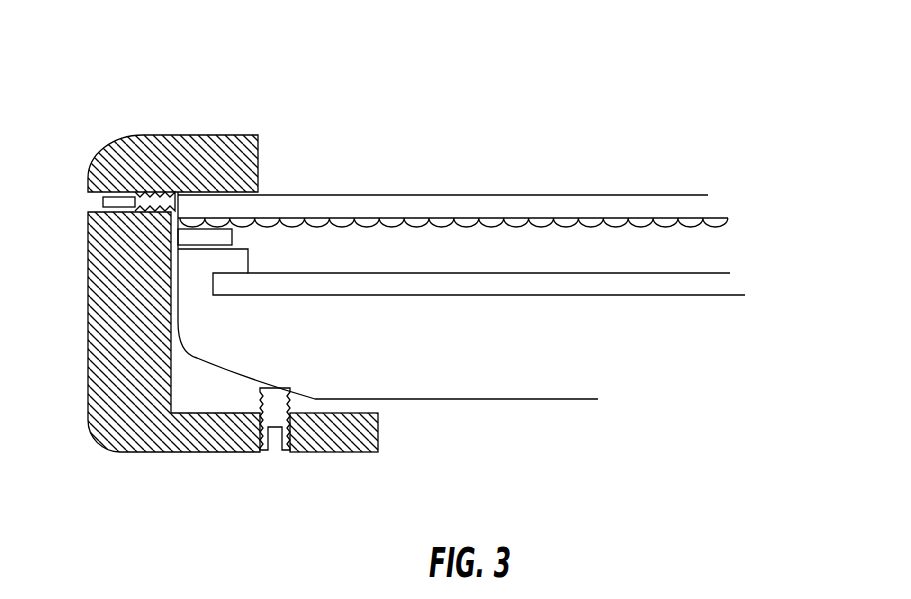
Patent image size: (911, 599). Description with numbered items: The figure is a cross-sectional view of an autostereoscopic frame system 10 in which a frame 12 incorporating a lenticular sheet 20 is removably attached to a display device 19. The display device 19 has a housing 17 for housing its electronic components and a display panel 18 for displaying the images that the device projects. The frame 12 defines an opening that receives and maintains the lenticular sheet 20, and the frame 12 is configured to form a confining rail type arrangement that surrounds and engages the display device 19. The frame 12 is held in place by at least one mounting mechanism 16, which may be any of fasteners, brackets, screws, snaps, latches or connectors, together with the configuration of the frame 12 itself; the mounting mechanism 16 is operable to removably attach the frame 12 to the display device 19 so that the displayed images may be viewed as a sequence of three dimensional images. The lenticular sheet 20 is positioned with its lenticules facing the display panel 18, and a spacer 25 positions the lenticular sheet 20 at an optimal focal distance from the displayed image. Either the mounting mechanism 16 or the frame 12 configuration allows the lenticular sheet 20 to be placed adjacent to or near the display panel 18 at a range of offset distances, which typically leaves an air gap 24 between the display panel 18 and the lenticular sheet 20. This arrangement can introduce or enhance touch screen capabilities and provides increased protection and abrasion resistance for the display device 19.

The autostereoscopic frame system 10 is at (203, 110).
The frame 12 is at (138, 483).
The mounting mechanism 16 is at (253, 525).
The housing 17 is at (537, 428).
The display panel 18 is at (838, 290).
The display device 19 is at (852, 350).
The lenticular sheet 20 is at (827, 215).
The air gap 24 is at (827, 250).
The spacer 25 is at (347, 252).